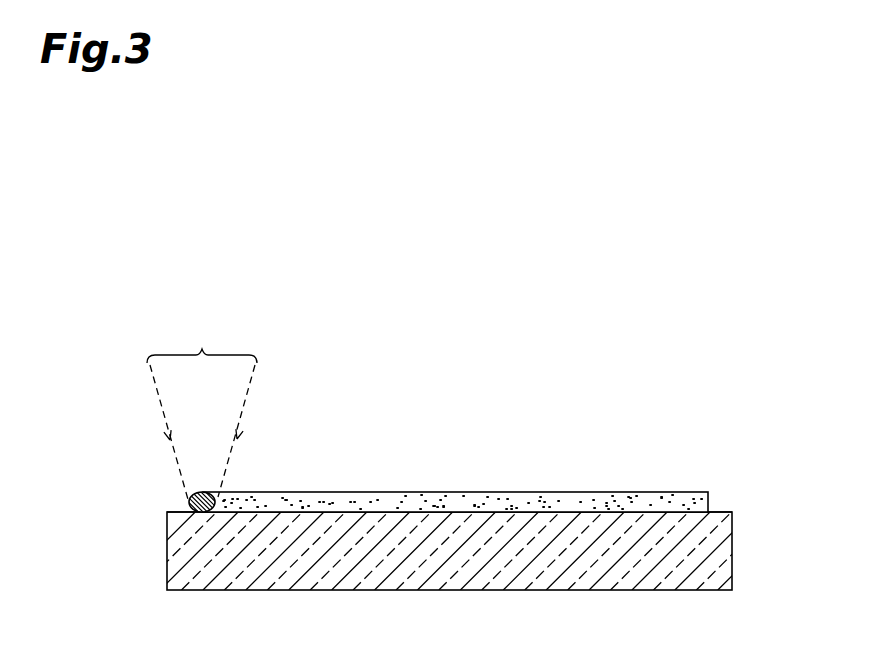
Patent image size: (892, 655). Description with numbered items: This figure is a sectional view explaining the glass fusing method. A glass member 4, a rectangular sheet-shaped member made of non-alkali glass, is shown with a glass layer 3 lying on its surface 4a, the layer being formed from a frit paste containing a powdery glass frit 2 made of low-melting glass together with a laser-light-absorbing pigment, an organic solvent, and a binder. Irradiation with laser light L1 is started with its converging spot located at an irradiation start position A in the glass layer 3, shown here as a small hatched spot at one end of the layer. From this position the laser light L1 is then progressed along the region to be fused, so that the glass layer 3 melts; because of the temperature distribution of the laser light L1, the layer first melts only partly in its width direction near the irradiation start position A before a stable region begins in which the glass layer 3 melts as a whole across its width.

The glass frit 2 is at (653, 494).
The glass layer 3 is at (445, 505).
The glass member 4 is at (673, 573).
The surface 4a is at (723, 512).
The irradiation start position A is at (209, 512).
The laser light L1 is at (202, 412).